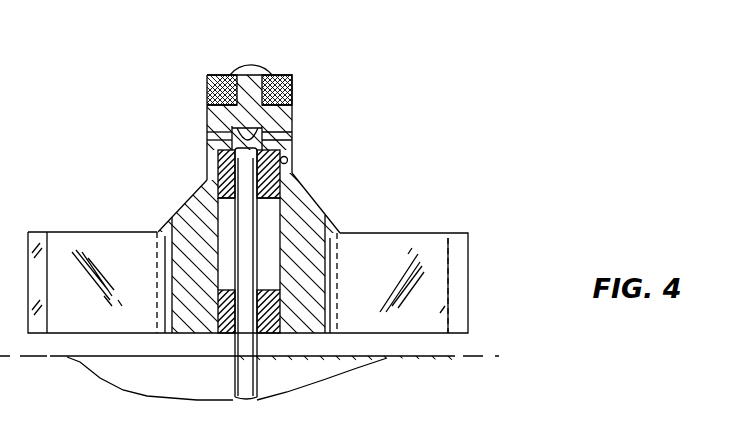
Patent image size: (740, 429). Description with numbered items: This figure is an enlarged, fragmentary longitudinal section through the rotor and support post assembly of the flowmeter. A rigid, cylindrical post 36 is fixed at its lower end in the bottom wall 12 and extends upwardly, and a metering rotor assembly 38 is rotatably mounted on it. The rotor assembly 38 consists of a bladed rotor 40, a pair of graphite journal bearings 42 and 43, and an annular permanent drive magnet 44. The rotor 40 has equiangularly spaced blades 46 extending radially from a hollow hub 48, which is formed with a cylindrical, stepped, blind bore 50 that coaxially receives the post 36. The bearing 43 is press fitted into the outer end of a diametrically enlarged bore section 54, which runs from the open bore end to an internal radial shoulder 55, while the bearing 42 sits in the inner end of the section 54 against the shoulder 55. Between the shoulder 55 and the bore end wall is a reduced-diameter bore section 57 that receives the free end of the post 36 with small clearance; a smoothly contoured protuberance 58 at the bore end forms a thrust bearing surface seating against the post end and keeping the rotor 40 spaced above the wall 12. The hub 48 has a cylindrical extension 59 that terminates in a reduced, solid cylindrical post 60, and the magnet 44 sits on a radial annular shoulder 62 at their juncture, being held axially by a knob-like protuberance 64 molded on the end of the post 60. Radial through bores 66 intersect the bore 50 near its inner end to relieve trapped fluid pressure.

The wall 12 is at (362, 357).
The cylindrical post 36 is at (248, 264).
The metering rotor assembly 38 is at (311, 122).
The bladed rotor 40 is at (160, 205).
The graphite journal bearing 42 is at (260, 152).
The graphite journal bearing 43 is at (220, 334).
The annular permanent drive magnet 44 is at (295, 88).
The blades 46 is at (68, 236).
The hollow hub 48 is at (330, 207).
The stepped blind bore 50 is at (228, 260).
The diametrically enlarged bore section 54 is at (288, 162).
The internal radial shoulder 55 is at (219, 165).
The reduced diameter bore section 57 is at (264, 140).
The protuberance 58 is at (207, 108).
The cylindrical hub extension 59 is at (232, 146).
The solid cylindrical post 60 is at (268, 87).
The radial annular shoulder 62 is at (212, 95).
The knob-like protuberance 64 is at (243, 66).
The radial through bores 66 is at (207, 137).